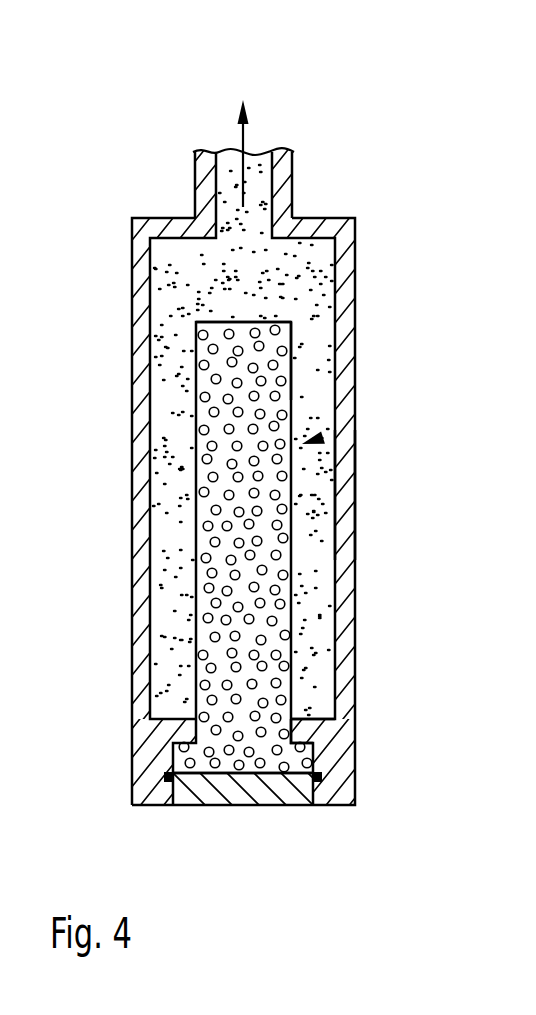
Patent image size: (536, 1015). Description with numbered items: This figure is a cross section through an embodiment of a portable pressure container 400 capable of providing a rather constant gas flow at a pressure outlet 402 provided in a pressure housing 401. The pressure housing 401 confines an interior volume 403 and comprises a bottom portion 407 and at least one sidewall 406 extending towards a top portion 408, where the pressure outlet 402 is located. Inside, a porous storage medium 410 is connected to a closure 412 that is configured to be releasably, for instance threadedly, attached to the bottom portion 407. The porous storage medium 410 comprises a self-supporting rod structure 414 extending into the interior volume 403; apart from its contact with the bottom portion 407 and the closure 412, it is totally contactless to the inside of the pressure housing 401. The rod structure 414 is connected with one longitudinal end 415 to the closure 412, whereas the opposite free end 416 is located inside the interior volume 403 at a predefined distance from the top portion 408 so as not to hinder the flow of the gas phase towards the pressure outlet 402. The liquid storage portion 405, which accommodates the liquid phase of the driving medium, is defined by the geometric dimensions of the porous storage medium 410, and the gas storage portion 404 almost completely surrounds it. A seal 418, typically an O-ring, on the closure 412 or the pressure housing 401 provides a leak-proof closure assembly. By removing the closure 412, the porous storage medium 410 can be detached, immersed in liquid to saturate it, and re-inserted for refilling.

The pressure container 400 is at (203, 80).
The pressure housing 401 is at (330, 230).
The pressure outlet 402 is at (288, 105).
The interior volume 403 is at (323, 437).
The gas storage portion 404 is at (315, 588).
The liquid storage portion 405 is at (220, 430).
The sidewall 406 is at (345, 507).
The bottom portion 407 is at (302, 732).
The top portion 408 is at (158, 230).
The porous storage medium 410 is at (220, 562).
The closure 412 is at (190, 793).
The self-supporting rod structure 414 is at (293, 350).
The longitudinal end 415 is at (245, 750).
The free end 416 is at (218, 320).
The seal 418 is at (321, 778).